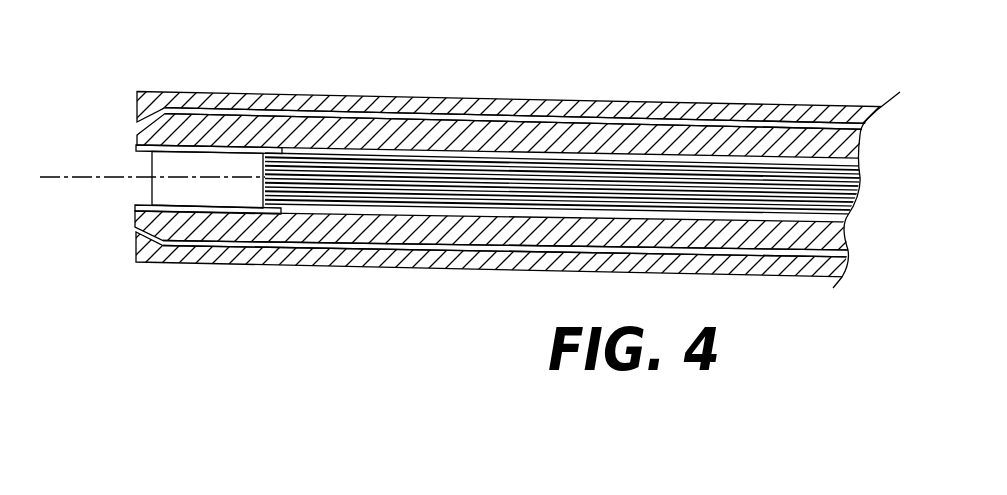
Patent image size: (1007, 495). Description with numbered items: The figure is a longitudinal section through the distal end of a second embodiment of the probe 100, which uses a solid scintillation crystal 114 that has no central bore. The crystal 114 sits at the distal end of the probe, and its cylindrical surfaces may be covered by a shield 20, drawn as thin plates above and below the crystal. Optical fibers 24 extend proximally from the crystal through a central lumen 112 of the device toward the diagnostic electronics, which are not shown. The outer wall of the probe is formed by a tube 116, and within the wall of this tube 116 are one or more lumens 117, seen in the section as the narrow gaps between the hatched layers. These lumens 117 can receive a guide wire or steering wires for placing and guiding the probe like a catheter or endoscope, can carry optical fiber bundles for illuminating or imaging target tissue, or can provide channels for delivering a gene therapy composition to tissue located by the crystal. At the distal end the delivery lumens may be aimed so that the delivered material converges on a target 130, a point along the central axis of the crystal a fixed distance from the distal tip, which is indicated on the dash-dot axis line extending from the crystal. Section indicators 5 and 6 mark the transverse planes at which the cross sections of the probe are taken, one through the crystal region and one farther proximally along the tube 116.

The section line 5- 5 is at (218, 75).
The section line 6- 6 is at (525, 83).
The shield 20 is at (243, 149).
The optical fibers 24 is at (743, 188).
The probe 100 is at (600, 91).
The central lumen 112 is at (323, 153).
The scintillation crystal 114 is at (163, 189).
The tube 116 is at (817, 243).
The lumens 117 is at (682, 122).
The target 130 is at (80, 175).